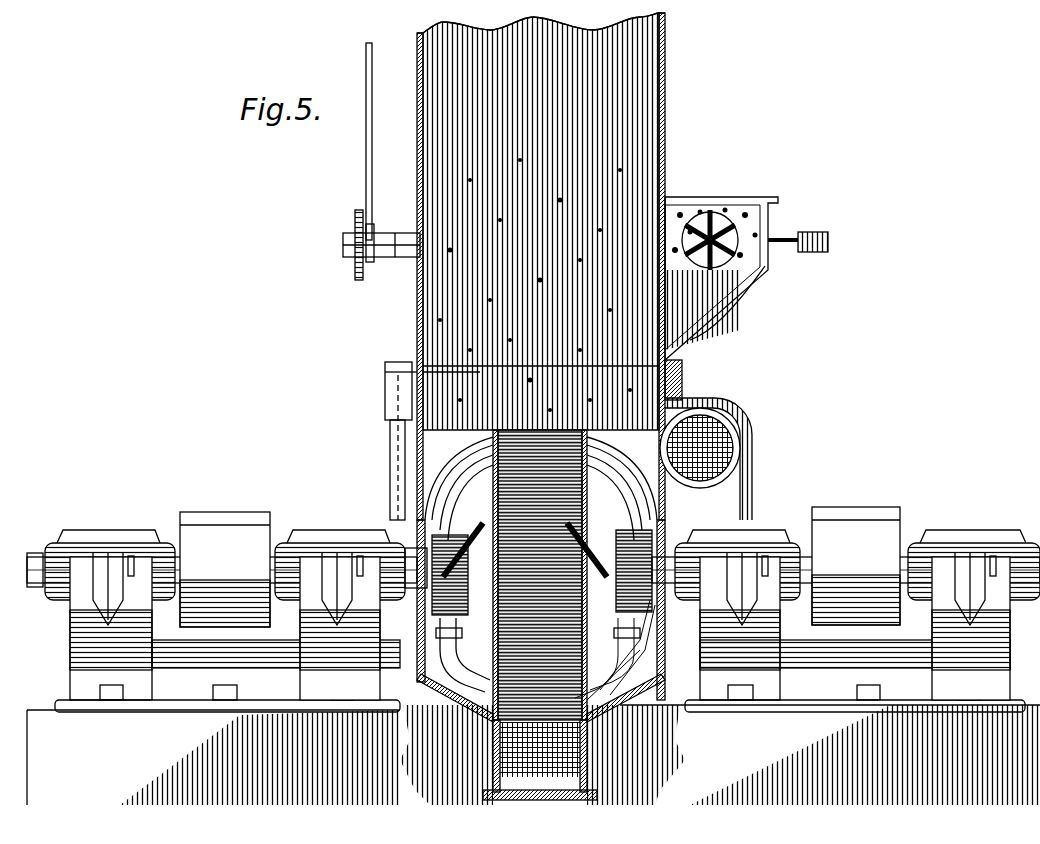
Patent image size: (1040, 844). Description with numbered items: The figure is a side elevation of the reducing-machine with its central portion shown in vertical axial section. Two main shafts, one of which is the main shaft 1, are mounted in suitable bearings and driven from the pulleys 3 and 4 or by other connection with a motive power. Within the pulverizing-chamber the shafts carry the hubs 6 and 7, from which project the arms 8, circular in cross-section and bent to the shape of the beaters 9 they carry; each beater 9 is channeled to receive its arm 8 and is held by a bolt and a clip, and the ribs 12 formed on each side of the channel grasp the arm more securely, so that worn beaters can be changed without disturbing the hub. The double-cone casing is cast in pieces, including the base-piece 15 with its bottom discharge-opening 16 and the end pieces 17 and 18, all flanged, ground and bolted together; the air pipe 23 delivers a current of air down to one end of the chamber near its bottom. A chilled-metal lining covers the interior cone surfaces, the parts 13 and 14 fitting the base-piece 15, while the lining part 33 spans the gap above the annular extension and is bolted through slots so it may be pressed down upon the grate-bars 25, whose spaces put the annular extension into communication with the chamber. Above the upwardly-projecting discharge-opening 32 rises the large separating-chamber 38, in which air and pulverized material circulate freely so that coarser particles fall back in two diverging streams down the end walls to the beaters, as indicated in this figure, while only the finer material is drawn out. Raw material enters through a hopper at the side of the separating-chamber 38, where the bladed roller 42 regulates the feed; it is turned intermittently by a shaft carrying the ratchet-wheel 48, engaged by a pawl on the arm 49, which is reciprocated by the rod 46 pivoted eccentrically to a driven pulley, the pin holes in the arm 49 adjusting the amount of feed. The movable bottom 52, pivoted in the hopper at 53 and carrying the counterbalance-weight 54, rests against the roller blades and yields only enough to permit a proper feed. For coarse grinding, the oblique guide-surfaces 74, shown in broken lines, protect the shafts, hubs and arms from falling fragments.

The main shaft 1 is at (44, 588).
The pulley 3 is at (225, 612).
The pulley 4 is at (857, 609).
The hub 6 is at (408, 535).
The hub 7 is at (665, 530).
The arm 8 is at (455, 620).
The beater 9 is at (465, 642).
The rib 12 is at (630, 478).
The lining part 13 is at (415, 695).
The lining part 14 is at (645, 685).
The base-piece 15 is at (662, 611).
The bottom discharge-opening 16 is at (540, 760).
The end piece 17 is at (392, 485).
The end piece 18 is at (662, 508).
The air pipe 23 is at (706, 459).
The grate-bar 25 is at (595, 722).
The upwardly-projecting discharge-opening 32 is at (665, 366).
The lining part 33 is at (478, 374).
The separating-chamber 38 is at (541, 266).
The bladed roller 42 is at (761, 265).
The rod 46 is at (373, 90).
The ratchet-wheel 48 is at (357, 268).
The arm 49 is at (372, 258).
The movable bottom 52 is at (745, 275).
The pivot 53 is at (772, 242).
The counterbalance-weight 54 is at (828, 240).
The oblique guide-surface 74 is at (682, 372).